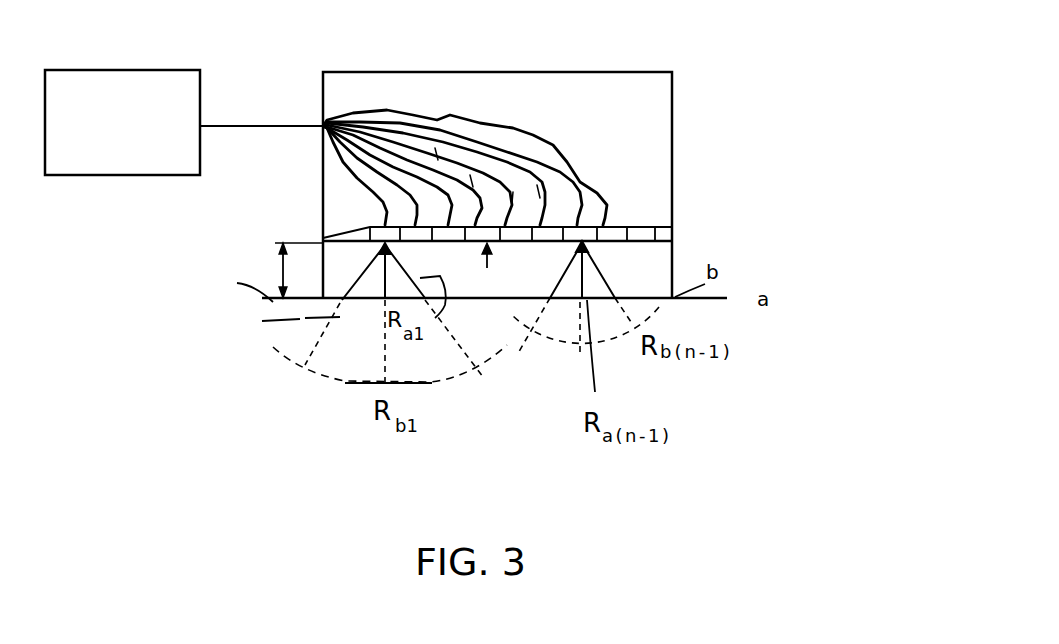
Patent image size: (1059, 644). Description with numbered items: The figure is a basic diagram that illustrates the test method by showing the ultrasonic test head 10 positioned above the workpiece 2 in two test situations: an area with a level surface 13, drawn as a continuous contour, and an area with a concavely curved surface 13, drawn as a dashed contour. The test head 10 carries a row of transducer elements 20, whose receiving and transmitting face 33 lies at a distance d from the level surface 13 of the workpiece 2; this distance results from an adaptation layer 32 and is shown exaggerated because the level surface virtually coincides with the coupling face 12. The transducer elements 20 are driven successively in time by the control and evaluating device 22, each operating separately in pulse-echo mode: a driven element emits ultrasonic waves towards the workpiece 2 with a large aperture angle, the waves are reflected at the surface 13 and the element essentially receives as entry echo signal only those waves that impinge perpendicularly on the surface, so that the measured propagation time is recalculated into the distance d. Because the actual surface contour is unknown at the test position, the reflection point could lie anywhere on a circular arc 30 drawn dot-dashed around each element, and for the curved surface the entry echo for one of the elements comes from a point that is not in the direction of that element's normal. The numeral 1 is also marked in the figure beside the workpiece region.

The control and evaluating device 22 is at (115, 70).
The ultrasonic test head 10 is at (700, 73).
The transducer elements 20 is at (753, 143).
The circular arc 30 is at (633, 268).
The adaptation layer 32 is at (277, 253).
The receiving and transmitting face 33 is at (479, 270).
The surface 13 is at (227, 321).
The coupling face 12 is at (276, 326).
The first region 1 is at (240, 362).
The workpiece 2 is at (727, 394).